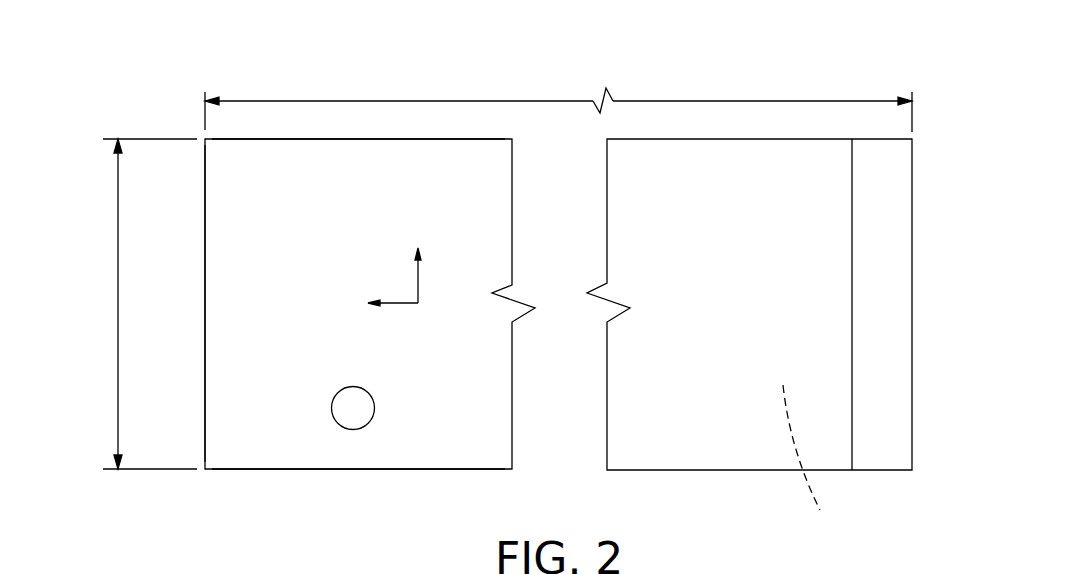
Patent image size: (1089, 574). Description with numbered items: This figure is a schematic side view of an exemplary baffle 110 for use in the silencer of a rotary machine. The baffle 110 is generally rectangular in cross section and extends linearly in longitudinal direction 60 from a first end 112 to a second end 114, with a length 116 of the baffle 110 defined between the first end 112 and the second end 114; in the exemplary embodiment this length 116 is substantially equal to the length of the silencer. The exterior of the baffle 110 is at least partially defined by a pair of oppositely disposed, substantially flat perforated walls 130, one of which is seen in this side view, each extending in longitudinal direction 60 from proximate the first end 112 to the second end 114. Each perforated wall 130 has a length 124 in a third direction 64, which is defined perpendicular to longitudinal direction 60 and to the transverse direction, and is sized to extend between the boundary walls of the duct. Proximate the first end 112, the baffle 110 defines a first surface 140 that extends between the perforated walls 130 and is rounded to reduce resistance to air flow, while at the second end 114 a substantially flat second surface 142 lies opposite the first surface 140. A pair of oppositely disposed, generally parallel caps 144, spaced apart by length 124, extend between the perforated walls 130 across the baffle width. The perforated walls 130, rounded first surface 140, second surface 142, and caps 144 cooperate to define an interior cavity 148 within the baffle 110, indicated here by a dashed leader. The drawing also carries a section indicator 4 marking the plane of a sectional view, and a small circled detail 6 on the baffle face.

The baffle 110 is at (594, 306).
The first end 112 is at (806, 342).
The second end 114 is at (207, 478).
The length 116 is at (543, 100).
The length 124 is at (118, 234).
The perforated wall 130 is at (813, 231).
The first surface 140 is at (876, 283).
The second surface 142 is at (205, 322).
The cap 144 is at (267, 139).
The interior cavity 148 is at (773, 377).
The aperture 6 is at (341, 426).
The longitudinal direction 60 is at (395, 303).
The third direction 64 is at (418, 273).
The section line 4- 4 is at (767, 117).